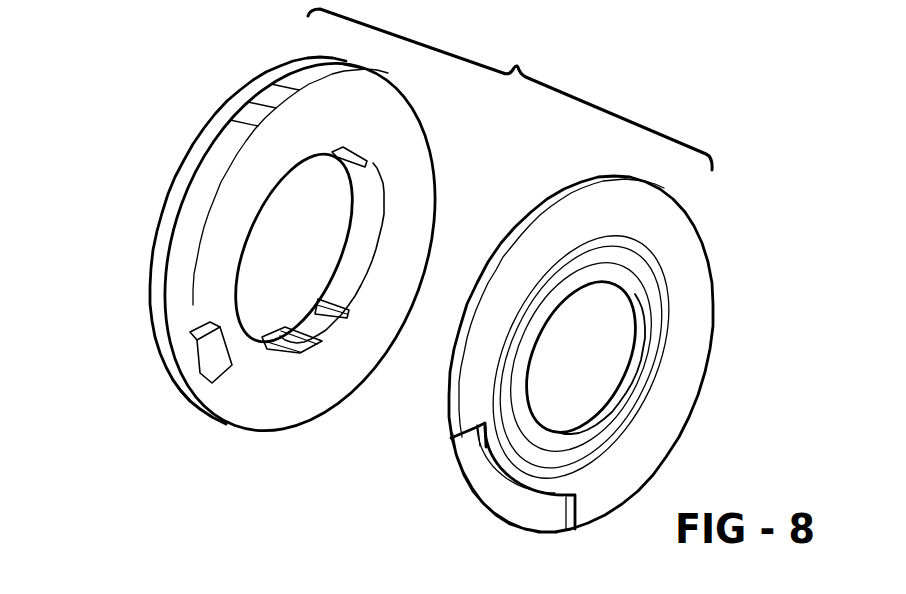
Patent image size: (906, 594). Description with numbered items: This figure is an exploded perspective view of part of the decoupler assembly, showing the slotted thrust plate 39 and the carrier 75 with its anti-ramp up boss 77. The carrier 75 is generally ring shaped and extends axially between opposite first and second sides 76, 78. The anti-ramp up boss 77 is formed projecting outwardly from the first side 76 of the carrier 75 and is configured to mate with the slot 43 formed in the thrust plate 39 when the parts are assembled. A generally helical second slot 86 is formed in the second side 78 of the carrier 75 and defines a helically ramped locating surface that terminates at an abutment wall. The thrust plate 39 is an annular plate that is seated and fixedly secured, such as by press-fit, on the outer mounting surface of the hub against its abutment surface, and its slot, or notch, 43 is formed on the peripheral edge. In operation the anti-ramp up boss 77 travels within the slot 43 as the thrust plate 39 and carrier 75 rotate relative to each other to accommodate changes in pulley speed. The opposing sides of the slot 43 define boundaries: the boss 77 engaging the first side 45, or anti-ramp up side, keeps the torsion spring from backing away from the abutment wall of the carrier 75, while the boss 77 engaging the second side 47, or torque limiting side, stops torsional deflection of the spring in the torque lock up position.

The first side 76 is at (430, 174).
The second side 78 is at (175, 172).
The second slot 86 is at (157, 243).
The carrier 75 is at (200, 414).
The anti-ramp up boss 77 is at (195, 364).
The thrust plate 39 is at (511, 488).
The slot 43 is at (486, 454).
The first side 45 is at (464, 443).
The second side 47 is at (566, 507).